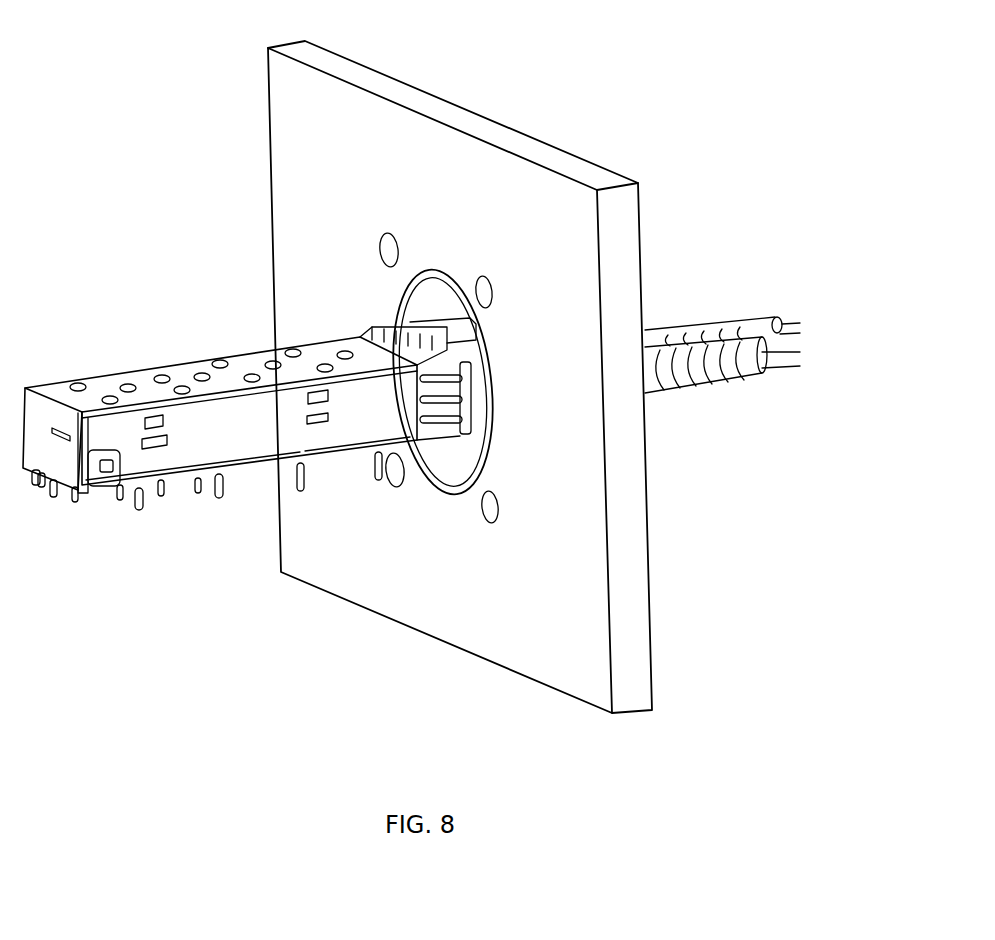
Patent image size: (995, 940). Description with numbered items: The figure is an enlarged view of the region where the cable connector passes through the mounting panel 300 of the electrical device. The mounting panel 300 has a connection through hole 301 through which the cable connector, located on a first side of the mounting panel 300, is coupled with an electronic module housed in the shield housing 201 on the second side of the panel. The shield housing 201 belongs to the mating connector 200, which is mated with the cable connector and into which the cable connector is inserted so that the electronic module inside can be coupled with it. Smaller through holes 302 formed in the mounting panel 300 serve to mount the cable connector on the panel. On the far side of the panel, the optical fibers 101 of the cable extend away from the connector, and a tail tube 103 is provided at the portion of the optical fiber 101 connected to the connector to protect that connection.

The mounting panel 300 is at (285, 188).
The connection through hole 301 is at (413, 310).
The through hole 302 is at (500, 516).
The mating connector 200 is at (150, 382).
The shield housing 201 is at (190, 465).
The optical fiber 101 is at (765, 325).
The tail tube 103 is at (705, 372).